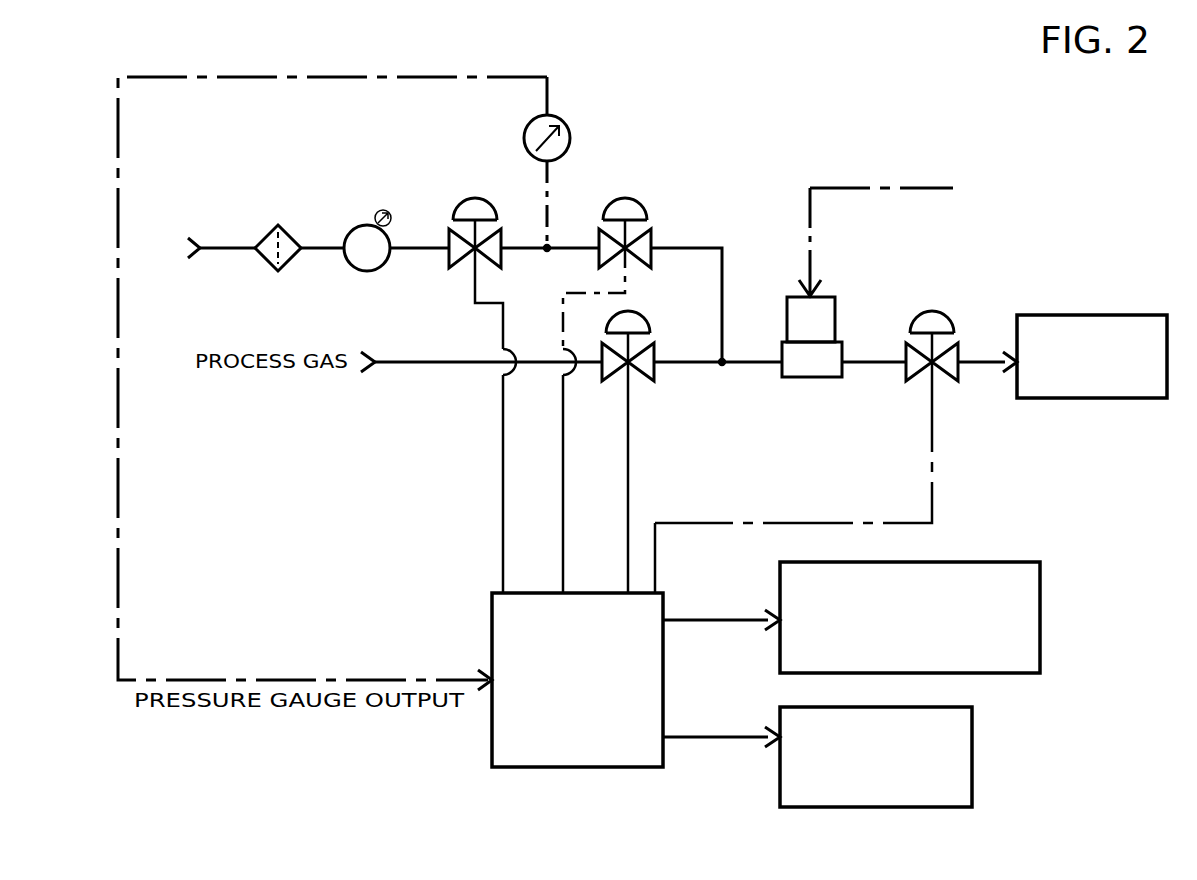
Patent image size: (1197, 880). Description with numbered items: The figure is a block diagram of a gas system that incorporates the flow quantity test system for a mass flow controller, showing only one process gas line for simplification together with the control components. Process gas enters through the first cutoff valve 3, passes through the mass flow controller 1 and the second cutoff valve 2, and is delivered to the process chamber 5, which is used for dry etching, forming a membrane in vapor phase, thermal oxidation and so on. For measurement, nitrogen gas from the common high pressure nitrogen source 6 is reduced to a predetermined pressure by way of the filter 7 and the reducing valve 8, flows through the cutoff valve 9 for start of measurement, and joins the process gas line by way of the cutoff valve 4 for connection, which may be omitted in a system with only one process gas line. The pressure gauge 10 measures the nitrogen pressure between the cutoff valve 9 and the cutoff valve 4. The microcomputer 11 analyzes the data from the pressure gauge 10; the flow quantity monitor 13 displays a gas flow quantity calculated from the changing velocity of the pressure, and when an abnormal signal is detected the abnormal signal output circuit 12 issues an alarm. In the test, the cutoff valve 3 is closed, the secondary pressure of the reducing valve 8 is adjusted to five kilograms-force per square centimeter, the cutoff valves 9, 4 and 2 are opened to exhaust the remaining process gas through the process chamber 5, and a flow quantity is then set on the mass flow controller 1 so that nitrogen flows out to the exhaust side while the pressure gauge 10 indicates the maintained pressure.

The mass flow controller 1 is at (836, 320).
The second cutoff valve 2 is at (948, 315).
The first cutoff valve 3 is at (643, 381).
The cutoff valve for connection 4 is at (640, 193).
The process chamber 5 is at (1073, 315).
The high pressure nitrogen source 6 is at (200, 212).
The filter 7 is at (268, 234).
The reducing valve 8 is at (353, 228).
The cutoff valve for start of measurement 9 is at (463, 199).
The pressure gauge 10 is at (570, 133).
The microcomputer 11 is at (492, 733).
The abnormal signal output circuit 12 is at (1040, 618).
The flow quantity monitor 13 is at (972, 757).